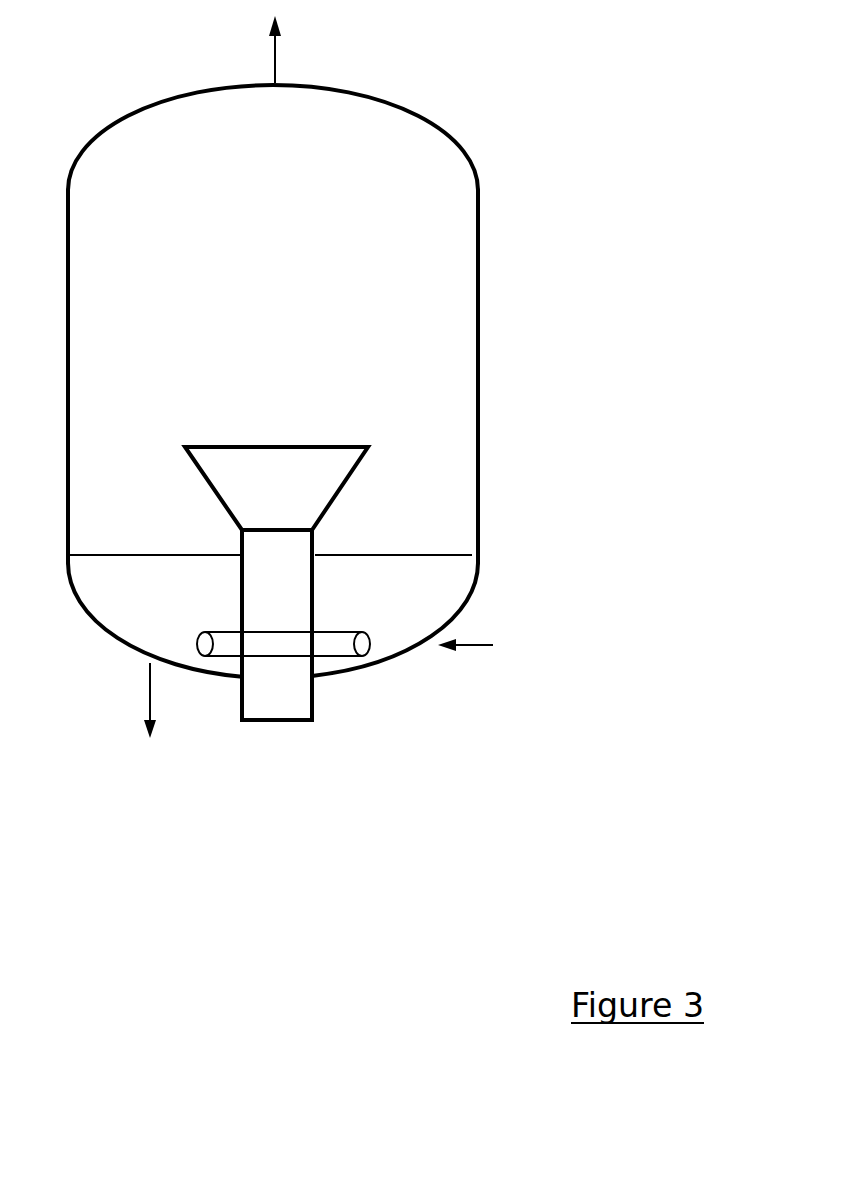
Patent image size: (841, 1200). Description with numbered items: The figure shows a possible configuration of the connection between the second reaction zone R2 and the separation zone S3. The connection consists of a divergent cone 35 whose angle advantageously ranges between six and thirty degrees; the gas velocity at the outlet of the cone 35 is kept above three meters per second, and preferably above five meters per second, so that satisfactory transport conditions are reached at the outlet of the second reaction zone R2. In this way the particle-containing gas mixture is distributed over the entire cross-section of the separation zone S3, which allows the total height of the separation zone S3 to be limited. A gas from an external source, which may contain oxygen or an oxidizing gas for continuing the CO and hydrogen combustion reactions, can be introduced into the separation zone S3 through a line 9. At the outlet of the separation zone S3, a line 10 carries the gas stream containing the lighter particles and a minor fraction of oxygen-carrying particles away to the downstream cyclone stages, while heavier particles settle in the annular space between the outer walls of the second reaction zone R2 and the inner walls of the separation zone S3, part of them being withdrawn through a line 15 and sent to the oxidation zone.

The line 10 is at (275, 67).
The separation zone S3 is at (256, 277).
The divergent cone 35 is at (243, 483).
The second reaction zone R2 is at (292, 623).
The line 9 is at (487, 651).
The line 15 is at (150, 698).